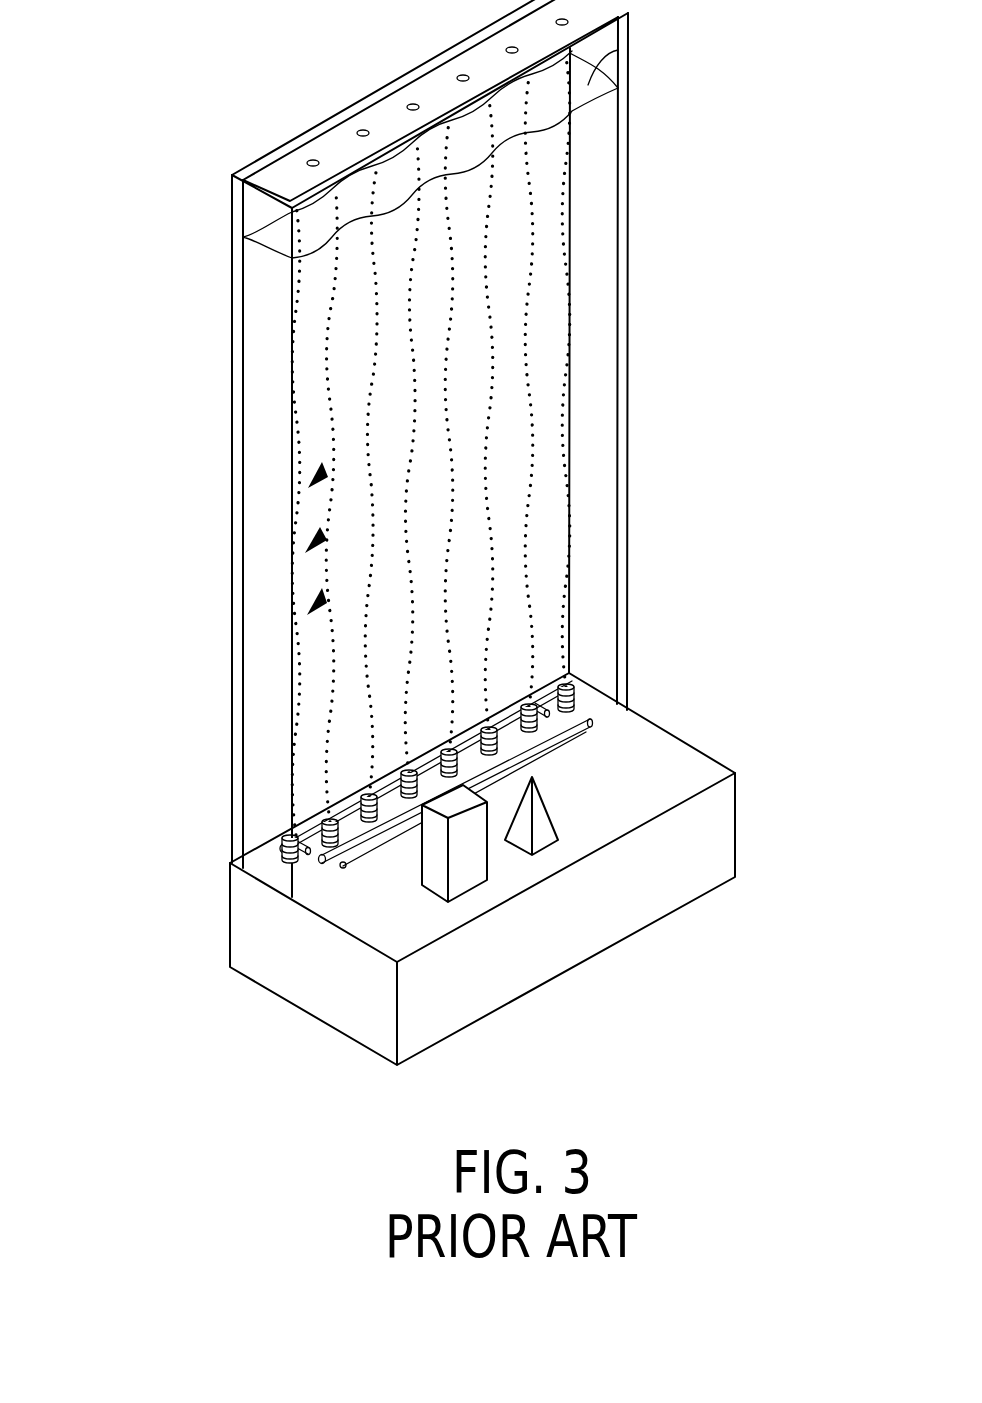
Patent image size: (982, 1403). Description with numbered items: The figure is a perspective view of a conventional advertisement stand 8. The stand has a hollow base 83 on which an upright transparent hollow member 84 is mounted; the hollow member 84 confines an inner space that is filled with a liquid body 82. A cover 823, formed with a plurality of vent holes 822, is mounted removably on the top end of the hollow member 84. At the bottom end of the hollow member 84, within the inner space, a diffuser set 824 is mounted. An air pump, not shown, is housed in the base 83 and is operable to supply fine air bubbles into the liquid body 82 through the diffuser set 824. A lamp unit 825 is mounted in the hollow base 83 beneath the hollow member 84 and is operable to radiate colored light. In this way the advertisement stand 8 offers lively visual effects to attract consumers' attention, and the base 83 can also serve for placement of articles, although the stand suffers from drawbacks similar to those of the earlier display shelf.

The advertisement stand 8 is at (196, 134).
The liquid body 82 is at (588, 85).
The vent holes 822 is at (460, 75).
The cover 823 is at (318, 140).
The diffuser set 824 is at (578, 690).
The lamp unit 825 is at (596, 716).
The hollow base 83 is at (710, 756).
The transparent hollow member 84 is at (629, 432).